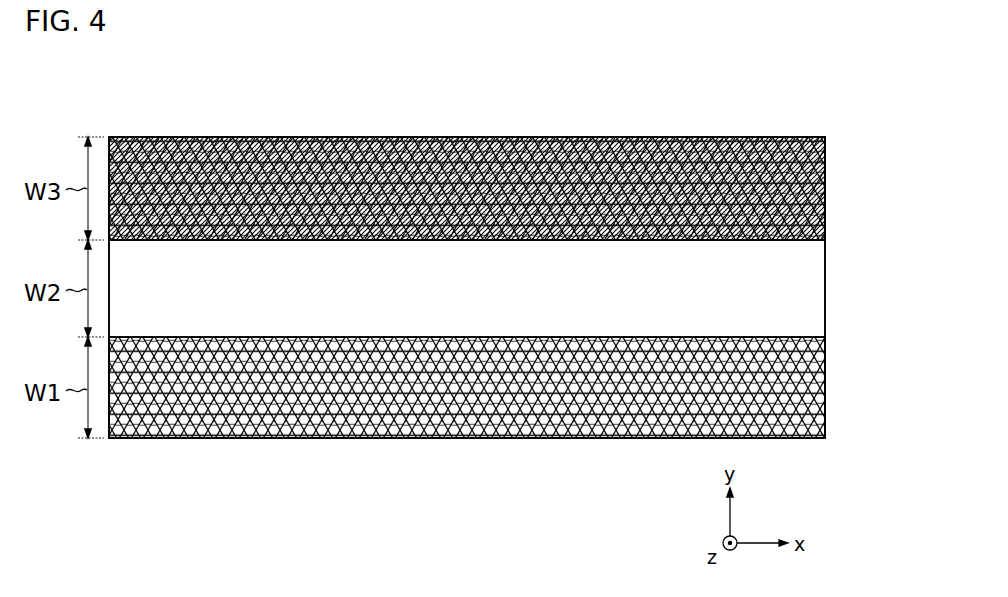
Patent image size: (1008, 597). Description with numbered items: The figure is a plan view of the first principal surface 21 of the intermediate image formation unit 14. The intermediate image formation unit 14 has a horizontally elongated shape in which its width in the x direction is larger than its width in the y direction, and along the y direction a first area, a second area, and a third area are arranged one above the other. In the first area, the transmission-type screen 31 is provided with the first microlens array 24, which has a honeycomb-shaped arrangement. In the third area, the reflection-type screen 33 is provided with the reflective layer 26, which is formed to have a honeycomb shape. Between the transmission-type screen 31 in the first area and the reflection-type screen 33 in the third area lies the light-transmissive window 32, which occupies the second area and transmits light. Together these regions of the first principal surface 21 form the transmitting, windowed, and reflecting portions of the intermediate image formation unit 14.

The first principal surface 21 is at (791, 116).
The reflection-type screen 33 is at (505, 188).
The reflective layer 26 is at (825, 211).
The light-transmissive window 32 is at (837, 290).
The transmission-type screen 31 is at (505, 387).
The first microlens array 24 is at (819, 413).
The intermediate image formation unit 14 is at (479, 545).